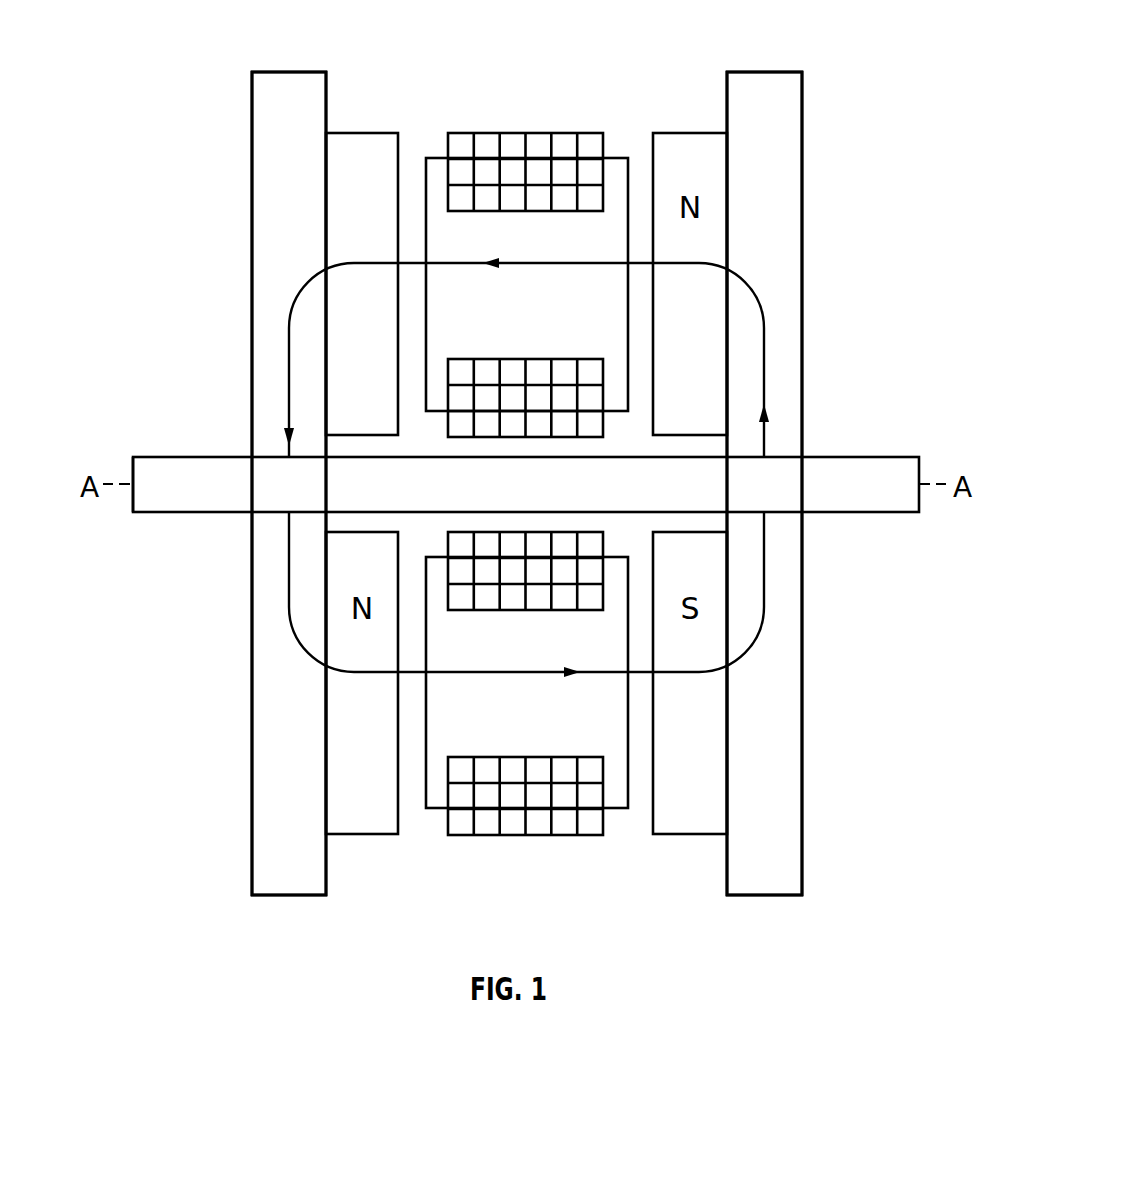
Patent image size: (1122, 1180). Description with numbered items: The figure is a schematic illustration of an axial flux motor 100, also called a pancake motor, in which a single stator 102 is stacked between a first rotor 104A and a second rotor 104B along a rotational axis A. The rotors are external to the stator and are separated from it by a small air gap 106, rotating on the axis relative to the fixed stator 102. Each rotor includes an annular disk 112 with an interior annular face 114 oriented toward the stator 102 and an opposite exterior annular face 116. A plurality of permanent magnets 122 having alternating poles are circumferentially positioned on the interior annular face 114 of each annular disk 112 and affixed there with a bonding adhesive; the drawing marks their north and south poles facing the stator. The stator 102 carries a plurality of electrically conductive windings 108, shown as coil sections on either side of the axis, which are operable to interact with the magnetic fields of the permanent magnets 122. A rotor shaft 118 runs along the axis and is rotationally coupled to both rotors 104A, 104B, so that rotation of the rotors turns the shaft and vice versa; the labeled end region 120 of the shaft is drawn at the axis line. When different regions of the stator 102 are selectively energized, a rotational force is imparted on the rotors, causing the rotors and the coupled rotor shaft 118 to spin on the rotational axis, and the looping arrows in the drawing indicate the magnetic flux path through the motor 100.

The axial flux motor 100 is at (893, 49).
The stator 102 is at (598, 318).
The first rotor 104A is at (214, 689).
The second rotor 104B is at (828, 621).
The air gap 106 is at (640, 808).
The electrically conductive windings 108 is at (565, 152).
The annular disk 112 is at (783, 125).
The interior annular face 114 is at (335, 100).
The exterior annular face 116 is at (252, 284).
The rotor shaft 118 is at (850, 472).
The shaft end 120 is at (132, 470).
The permanent magnets 122 is at (345, 168).